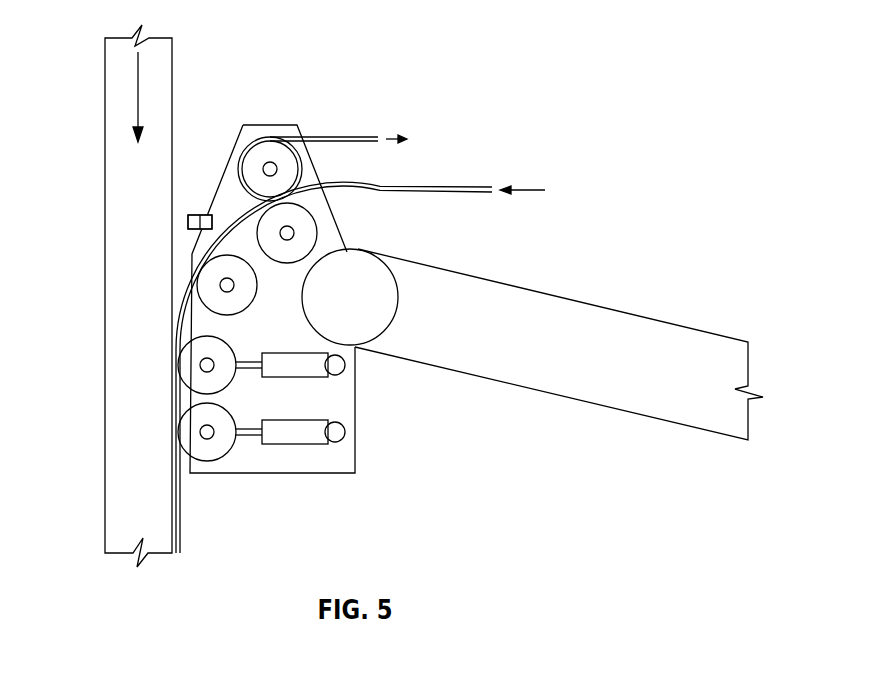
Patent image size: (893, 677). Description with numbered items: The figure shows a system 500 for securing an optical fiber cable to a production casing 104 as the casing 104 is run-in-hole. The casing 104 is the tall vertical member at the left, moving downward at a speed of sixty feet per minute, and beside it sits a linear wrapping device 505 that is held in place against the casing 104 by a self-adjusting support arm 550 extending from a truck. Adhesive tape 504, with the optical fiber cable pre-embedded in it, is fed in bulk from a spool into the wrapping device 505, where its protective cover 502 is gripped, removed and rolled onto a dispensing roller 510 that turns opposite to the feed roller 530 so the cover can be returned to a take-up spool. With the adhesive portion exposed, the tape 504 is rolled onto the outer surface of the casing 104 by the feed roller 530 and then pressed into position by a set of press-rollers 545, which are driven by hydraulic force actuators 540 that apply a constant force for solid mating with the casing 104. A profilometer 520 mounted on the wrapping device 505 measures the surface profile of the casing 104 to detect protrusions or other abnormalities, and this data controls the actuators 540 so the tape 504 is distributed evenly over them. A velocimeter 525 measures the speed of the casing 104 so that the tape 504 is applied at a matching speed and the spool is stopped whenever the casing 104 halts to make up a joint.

The casing 104 is at (174, 90).
The system 500 is at (624, 217).
The protective cover 502 is at (321, 135).
The adhesive tape 504 is at (466, 197).
The linear wrapping device 505 is at (341, 498).
The dispensing roller 510 is at (302, 170).
The profilometer 520 is at (186, 222).
The velocimeter 525 is at (203, 215).
The feed roller 530 is at (317, 233).
The hydraulic force actuators 540 is at (357, 372).
The press-rollers 545 is at (178, 368).
The self-adjusting support arm 550 is at (712, 432).